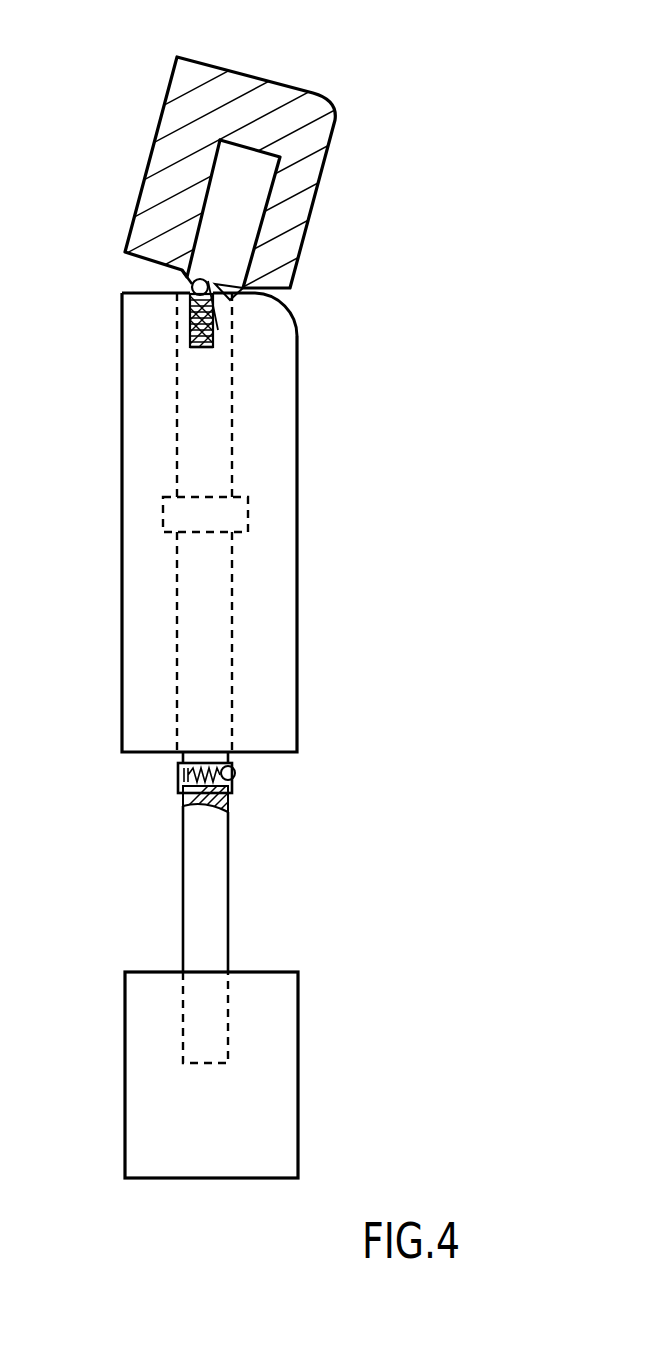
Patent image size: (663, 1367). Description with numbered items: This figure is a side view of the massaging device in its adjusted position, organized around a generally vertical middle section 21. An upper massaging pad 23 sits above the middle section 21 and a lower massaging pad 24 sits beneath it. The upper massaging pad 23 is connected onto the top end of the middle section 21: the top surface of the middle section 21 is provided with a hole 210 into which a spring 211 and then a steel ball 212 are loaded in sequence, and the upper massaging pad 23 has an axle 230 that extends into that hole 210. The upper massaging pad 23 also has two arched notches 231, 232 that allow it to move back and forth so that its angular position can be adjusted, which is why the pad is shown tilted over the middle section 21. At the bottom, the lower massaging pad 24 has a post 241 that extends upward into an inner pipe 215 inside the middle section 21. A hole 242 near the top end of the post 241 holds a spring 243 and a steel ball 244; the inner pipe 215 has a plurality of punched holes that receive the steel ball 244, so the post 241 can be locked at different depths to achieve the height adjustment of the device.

The upper massaging pad 23 is at (270, 97).
The arched notch 231 is at (196, 280).
The arched notch 232 is at (232, 284).
The axle 230 is at (244, 304).
The steel ball 212 is at (191, 288).
The hole 210 is at (190, 333).
The spring 211 is at (190, 341).
The middle section 21 is at (299, 612).
The inner pipe 215 is at (200, 710).
The spring 243 is at (183, 773).
The steel ball 244 is at (236, 774).
The hole 242 is at (192, 798).
The post 241 is at (217, 885).
The lower massaging pad 24 is at (267, 1098).